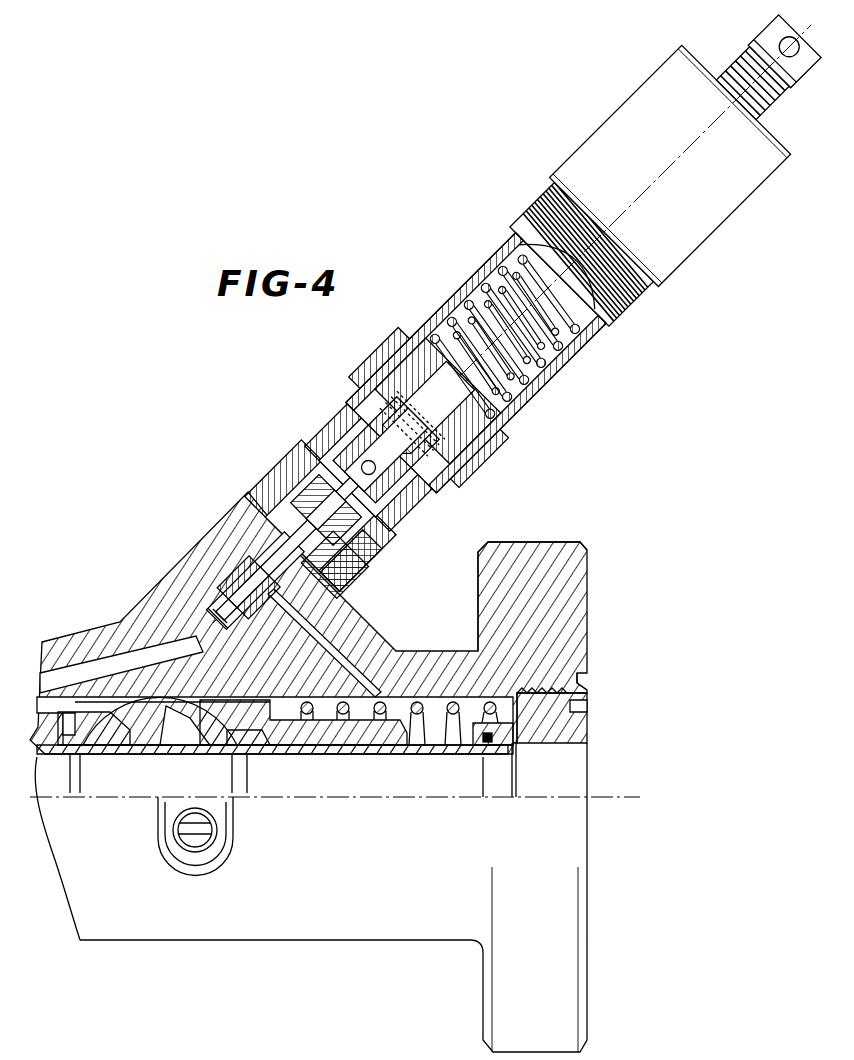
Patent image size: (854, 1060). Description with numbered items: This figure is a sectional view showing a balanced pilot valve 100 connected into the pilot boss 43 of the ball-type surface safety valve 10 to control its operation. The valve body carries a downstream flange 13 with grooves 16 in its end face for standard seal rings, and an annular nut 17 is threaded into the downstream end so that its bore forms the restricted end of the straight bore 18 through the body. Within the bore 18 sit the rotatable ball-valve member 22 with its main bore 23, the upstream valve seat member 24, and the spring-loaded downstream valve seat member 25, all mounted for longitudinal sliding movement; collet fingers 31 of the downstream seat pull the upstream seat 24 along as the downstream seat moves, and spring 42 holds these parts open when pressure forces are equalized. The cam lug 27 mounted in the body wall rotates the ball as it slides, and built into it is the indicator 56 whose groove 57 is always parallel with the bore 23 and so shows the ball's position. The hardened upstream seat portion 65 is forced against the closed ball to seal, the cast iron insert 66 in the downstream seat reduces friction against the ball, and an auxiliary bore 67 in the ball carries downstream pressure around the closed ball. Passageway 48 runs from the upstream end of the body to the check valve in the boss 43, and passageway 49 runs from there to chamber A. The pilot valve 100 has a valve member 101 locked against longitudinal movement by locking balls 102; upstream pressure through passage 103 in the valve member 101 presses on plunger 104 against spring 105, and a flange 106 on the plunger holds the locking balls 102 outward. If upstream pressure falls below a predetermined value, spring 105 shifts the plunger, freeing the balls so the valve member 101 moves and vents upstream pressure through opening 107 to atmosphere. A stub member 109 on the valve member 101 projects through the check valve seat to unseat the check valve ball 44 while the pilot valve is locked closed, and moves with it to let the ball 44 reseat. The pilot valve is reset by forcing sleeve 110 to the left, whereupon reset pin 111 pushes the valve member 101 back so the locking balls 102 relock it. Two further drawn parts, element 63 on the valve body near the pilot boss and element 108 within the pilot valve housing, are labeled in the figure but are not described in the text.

The ball-type surface safety valve 10 is at (612, 587).
The downstream flange 13 is at (585, 552).
The grooves 16 is at (578, 677).
The annular nut 17 is at (577, 700).
The straight bore 18 is at (400, 703).
The rotatable ball-valve member 22 is at (135, 745).
The main bore 23 is at (160, 742).
The upstream valve seat member 24 is at (53, 770).
The spring-loaded downstream valve seat member 25 is at (354, 758).
The cam lug 27 is at (165, 852).
The collet fingers 31 is at (70, 704).
The spring 42 is at (453, 707).
The pilot boss 43 is at (345, 574).
The check valve ball 44 is at (223, 613).
The passageway 48 is at (98, 660).
The passageway 49 is at (332, 648).
The indicator 56 is at (188, 843).
The groove 57 is at (200, 832).
The packing gland 63 is at (262, 528).
The hardened upstream seat portion 65 is at (70, 747).
The cast iron insert 66 is at (250, 743).
The auxiliary bore 67 is at (180, 740).
The balanced pilot valve 100 is at (587, 365).
The valve member 101 is at (310, 507).
The locking balls 102 is at (352, 462).
The passage 103 is at (330, 590).
The plunger 104 is at (417, 430).
The spring 105 is at (543, 348).
The flange 106 is at (373, 480).
The opening 107 is at (307, 502).
The spring 108 is at (527, 380).
The stub member 109 is at (240, 567).
The sleeve 110 is at (382, 372).
The reset pin 111 is at (320, 443).